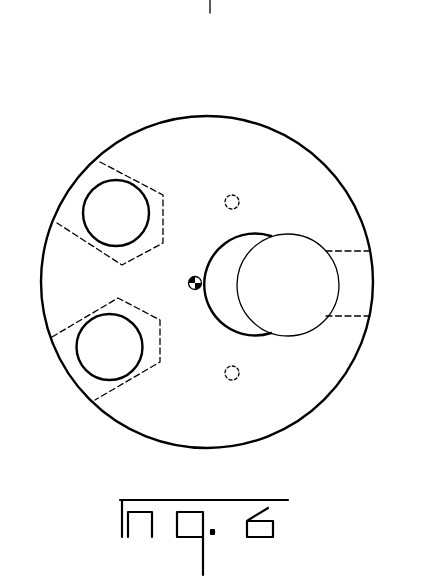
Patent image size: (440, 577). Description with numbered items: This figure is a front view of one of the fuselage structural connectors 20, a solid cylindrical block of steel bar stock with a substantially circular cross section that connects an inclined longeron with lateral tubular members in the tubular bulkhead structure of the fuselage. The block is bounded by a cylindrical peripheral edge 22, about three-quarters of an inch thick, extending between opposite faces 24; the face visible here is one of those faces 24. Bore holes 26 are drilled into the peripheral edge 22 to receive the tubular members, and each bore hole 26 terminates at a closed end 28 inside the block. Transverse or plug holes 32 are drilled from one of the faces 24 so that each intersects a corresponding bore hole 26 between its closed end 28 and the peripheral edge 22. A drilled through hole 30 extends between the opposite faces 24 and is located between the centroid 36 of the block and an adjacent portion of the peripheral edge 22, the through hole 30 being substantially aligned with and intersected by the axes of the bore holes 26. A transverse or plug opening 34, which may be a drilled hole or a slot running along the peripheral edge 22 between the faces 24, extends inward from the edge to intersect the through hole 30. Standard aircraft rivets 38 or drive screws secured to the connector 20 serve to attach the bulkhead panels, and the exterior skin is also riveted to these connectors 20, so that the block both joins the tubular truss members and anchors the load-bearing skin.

The structural connector 20 is at (131, 84).
The cylindrical peripheral edge 22 is at (234, 118).
The faces 24 is at (302, 378).
The bore hole 26 is at (80, 230).
The closed end 28 is at (163, 232).
The through hole 30 is at (273, 255).
The transverse hole 32 is at (123, 213).
The transverse opening 34 is at (347, 278).
The centroid 36 is at (198, 290).
The rivets 38 is at (240, 196).